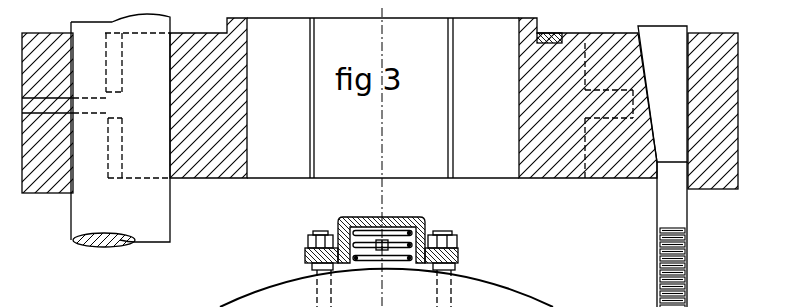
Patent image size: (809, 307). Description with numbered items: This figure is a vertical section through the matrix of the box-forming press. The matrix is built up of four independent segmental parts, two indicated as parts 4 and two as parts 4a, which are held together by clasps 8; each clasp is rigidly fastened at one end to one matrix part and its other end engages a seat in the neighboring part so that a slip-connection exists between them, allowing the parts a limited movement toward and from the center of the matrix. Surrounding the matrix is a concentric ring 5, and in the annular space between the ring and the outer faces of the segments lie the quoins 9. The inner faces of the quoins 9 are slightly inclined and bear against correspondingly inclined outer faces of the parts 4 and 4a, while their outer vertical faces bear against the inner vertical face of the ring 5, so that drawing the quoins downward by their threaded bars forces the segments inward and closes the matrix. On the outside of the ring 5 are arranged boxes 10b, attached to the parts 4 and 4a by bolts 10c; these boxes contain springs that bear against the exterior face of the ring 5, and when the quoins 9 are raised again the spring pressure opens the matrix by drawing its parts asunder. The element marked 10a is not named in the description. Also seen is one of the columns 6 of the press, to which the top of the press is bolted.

The segmental part of the matrix 4 is at (413, 98).
The segmental part of the matrix 4a is at (381, 98).
The ring 5 is at (380, 113).
The column 6 is at (120, 130).
The clasp 8 is at (549, 29).
The quoin 9 is at (662, 94).
The casing 10a is at (421, 222).
The box 10b is at (385, 217).
The bolt 10c is at (386, 288).